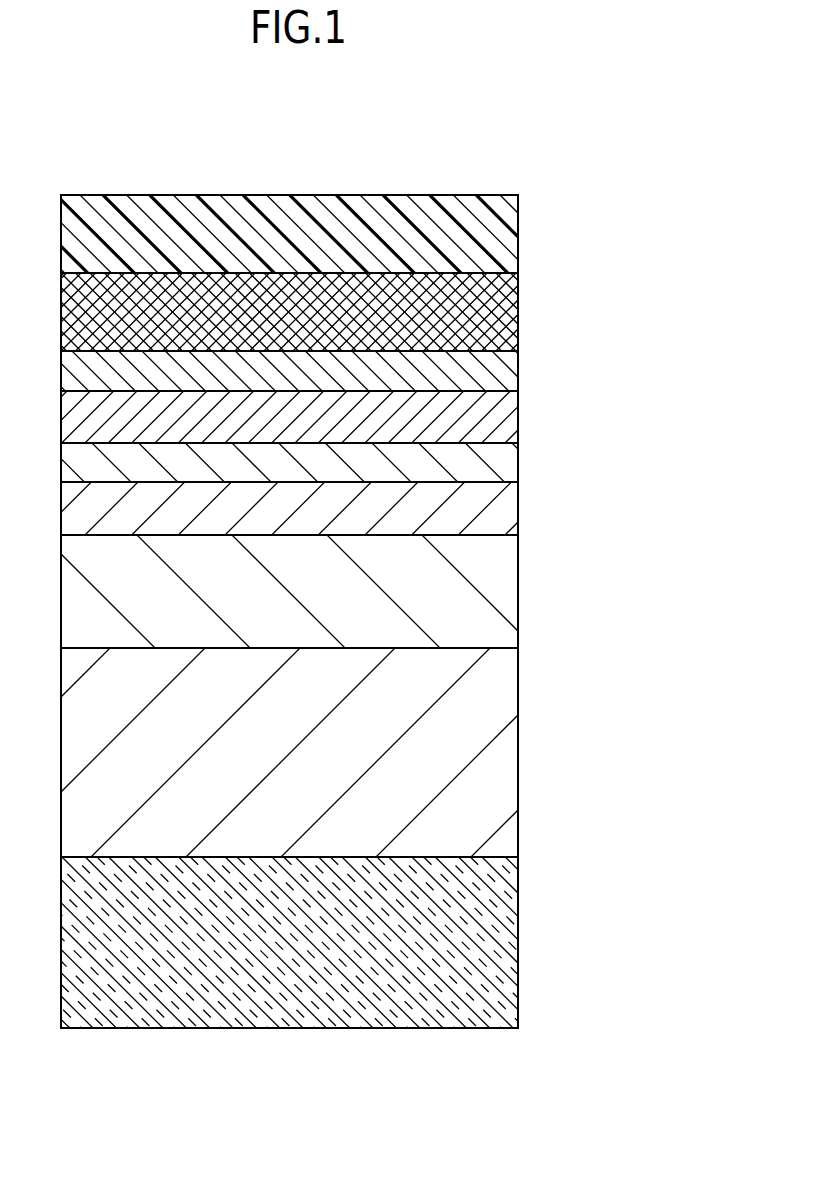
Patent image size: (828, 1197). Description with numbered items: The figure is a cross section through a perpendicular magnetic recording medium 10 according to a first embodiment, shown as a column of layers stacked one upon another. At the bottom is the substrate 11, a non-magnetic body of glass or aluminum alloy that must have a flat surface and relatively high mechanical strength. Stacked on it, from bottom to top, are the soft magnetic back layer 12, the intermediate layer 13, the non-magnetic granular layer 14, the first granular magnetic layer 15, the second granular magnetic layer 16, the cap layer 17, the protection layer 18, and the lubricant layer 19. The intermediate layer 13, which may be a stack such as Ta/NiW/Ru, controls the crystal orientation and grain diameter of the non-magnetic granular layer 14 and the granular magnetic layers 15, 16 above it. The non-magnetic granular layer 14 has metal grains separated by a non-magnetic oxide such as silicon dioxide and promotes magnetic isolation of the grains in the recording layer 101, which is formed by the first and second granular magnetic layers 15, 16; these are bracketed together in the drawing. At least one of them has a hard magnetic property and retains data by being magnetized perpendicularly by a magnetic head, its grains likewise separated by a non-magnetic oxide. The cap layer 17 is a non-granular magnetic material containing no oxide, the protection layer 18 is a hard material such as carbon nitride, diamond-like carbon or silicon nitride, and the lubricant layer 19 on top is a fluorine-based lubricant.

The perpendicular magnetic recording medium 10 is at (134, 120).
The substrate 11 is at (502, 952).
The soft magnetic back layer 12 is at (502, 753).
The intermediate layer 13 is at (502, 594).
The non-magnetic granular layer 14 is at (502, 512).
The first granular magnetic layer 15 is at (502, 462).
The second granular magnetic layer 16 is at (502, 416).
The cap layer 17 is at (502, 371).
The protection layer 18 is at (502, 310).
The lubricant layer 19 is at (502, 233).
The recording layer 101 is at (637, 348).